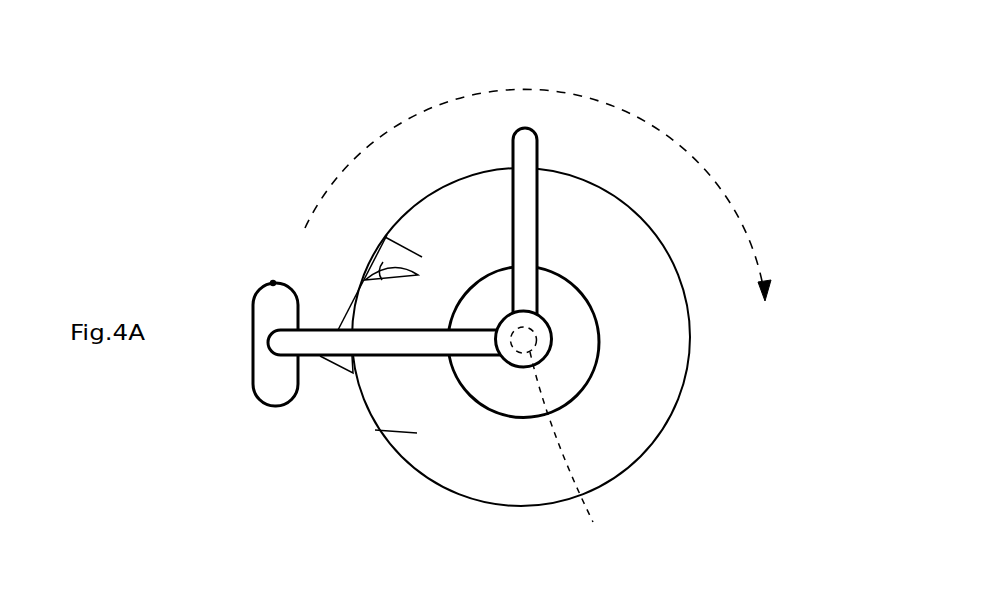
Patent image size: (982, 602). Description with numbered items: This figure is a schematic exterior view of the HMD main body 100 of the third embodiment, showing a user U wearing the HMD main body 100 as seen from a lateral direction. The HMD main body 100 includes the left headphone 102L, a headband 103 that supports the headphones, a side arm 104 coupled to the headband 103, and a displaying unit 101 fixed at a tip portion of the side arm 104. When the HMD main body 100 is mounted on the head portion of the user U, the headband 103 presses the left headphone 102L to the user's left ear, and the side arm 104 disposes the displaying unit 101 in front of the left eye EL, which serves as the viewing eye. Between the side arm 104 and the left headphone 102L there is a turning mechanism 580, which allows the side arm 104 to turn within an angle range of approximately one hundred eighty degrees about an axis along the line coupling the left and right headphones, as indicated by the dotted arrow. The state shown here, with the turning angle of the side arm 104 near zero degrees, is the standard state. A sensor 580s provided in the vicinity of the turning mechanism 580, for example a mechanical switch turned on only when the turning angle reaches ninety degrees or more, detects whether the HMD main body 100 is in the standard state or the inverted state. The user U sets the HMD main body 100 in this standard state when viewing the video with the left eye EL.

The HMD main body 100 is at (542, 86).
The displaying unit 101 is at (273, 295).
The headband 103 is at (513, 143).
The side arm 104 is at (380, 356).
The left headphone 102L is at (585, 365).
The turning mechanism 580 is at (512, 365).
The sensor 580s is at (573, 442).
The user U is at (690, 317).
The left eye EL is at (370, 263).